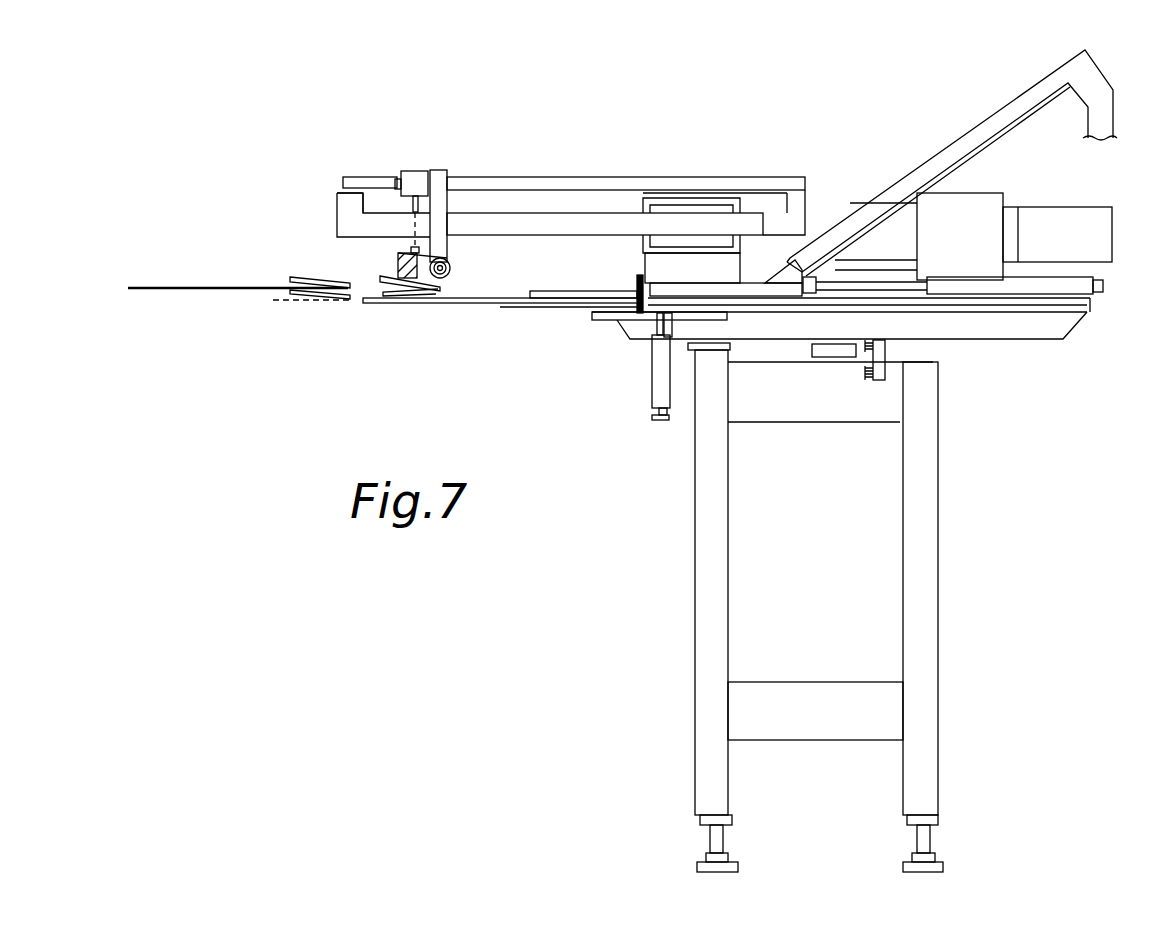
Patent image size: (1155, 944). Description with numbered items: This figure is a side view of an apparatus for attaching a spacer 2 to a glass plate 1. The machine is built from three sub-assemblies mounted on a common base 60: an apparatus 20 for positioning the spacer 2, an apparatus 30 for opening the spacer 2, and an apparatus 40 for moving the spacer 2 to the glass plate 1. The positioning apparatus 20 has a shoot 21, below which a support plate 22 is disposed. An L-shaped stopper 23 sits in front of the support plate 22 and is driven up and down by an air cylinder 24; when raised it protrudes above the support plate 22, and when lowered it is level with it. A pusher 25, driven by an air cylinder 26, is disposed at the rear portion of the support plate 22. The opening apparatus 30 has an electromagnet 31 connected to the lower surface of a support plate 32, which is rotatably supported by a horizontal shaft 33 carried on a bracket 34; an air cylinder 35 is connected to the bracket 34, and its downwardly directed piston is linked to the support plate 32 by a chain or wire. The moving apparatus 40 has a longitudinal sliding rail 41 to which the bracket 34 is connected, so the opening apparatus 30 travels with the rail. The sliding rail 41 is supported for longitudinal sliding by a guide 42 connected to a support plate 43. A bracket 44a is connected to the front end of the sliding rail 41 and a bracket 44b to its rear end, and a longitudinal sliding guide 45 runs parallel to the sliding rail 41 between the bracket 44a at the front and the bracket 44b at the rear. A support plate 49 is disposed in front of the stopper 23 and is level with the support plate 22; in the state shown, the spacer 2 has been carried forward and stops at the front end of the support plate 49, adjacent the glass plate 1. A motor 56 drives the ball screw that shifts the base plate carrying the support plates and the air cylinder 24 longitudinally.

The glass plate 1 is at (218, 292).
The spacer 2 is at (402, 296).
The apparatus for positioning the spacer 20 is at (747, 325).
The shoot 21 is at (975, 137).
The support plate 22 is at (825, 300).
The stopper 23 is at (638, 283).
The air cylinder 24 is at (657, 383).
The pusher 25 is at (818, 270).
The air cylinder 26 is at (1047, 285).
The apparatus for opening the spacer 30 is at (374, 175).
The electromagnet 31 is at (397, 268).
The support plate 32 is at (397, 253).
The horizontal shaft 33 is at (450, 268).
The bracket 34 is at (437, 225).
The air cylinder 35 is at (415, 168).
The apparatus for moving the spacer to the glass plate 40 is at (672, 176).
The sliding rail 41 is at (517, 223).
The guide 42 is at (680, 208).
The support plate 43 is at (710, 203).
The bracket 44a is at (348, 203).
The bracket 44b is at (795, 203).
The sliding guide 45 is at (588, 177).
The support plate 49 is at (453, 303).
The motor 56 is at (1075, 225).
The base 60 is at (920, 601).